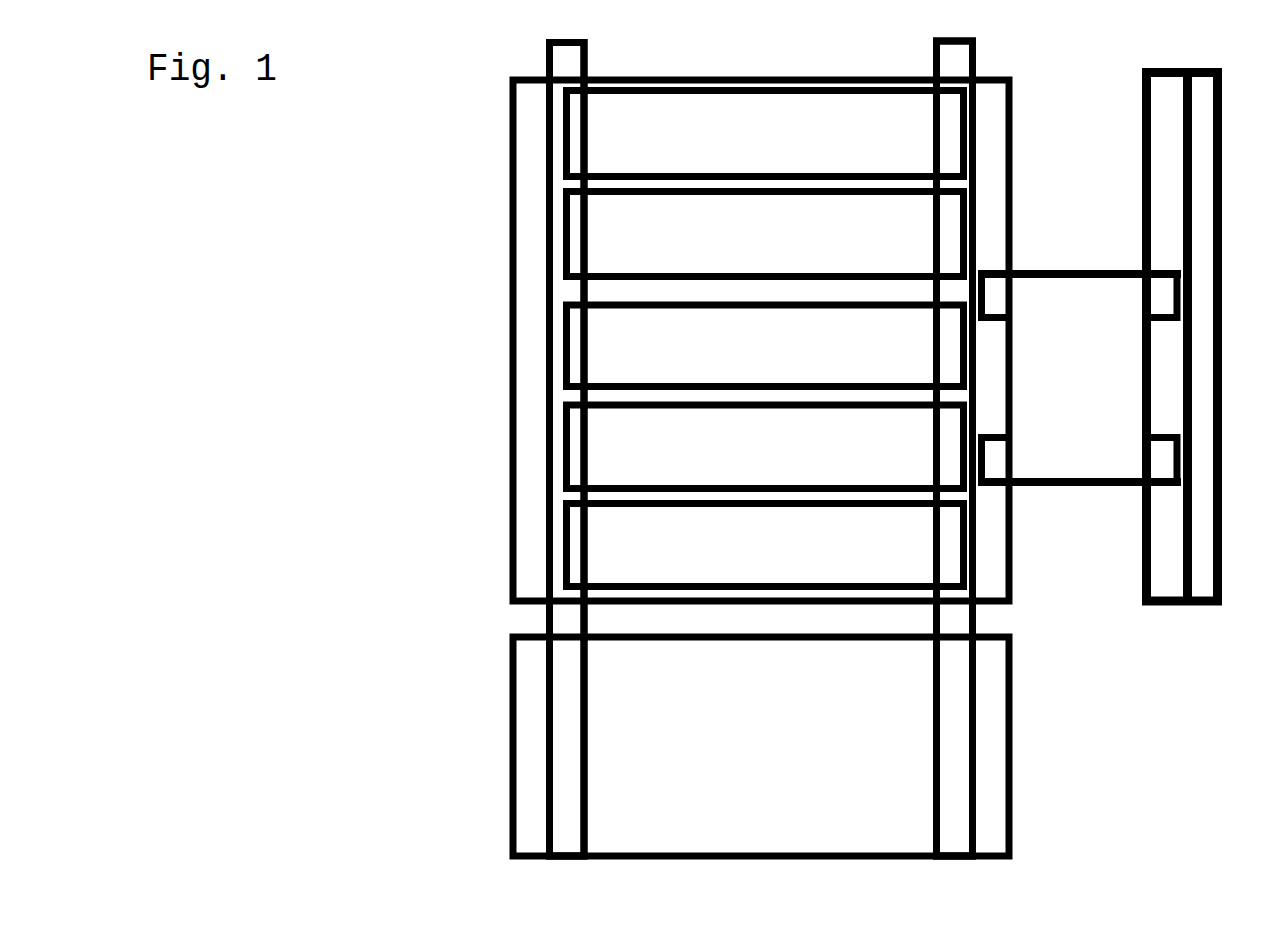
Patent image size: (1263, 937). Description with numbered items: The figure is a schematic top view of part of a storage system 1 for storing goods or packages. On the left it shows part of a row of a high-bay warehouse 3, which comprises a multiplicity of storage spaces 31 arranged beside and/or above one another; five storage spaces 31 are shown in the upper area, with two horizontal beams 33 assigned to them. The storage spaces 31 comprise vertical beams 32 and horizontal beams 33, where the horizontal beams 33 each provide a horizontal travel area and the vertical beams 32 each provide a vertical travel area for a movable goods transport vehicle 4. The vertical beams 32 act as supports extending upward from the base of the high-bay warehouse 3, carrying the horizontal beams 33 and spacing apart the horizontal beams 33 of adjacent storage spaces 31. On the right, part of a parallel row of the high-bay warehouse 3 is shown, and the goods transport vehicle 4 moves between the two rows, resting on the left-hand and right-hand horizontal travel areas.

The storage system 1 is at (713, 428).
The high-bay warehouse 3 is at (865, 428).
The goods transport vehicle 4 is at (1079, 378).
The storage space 31 is at (765, 339).
The vertical beam 32 is at (761, 448).
The horizontal beam 33 is at (761, 428).